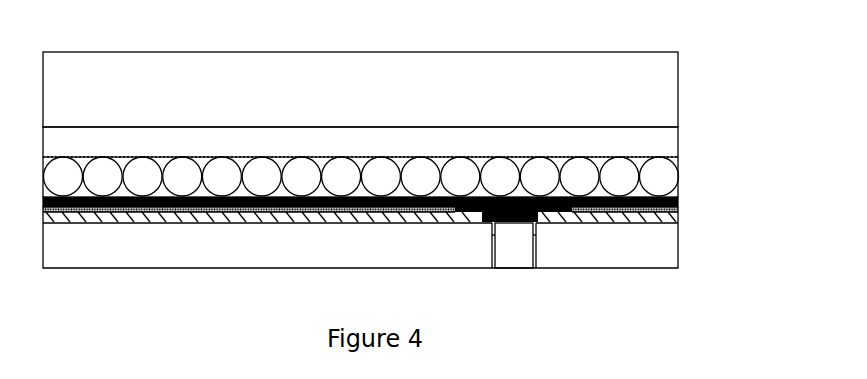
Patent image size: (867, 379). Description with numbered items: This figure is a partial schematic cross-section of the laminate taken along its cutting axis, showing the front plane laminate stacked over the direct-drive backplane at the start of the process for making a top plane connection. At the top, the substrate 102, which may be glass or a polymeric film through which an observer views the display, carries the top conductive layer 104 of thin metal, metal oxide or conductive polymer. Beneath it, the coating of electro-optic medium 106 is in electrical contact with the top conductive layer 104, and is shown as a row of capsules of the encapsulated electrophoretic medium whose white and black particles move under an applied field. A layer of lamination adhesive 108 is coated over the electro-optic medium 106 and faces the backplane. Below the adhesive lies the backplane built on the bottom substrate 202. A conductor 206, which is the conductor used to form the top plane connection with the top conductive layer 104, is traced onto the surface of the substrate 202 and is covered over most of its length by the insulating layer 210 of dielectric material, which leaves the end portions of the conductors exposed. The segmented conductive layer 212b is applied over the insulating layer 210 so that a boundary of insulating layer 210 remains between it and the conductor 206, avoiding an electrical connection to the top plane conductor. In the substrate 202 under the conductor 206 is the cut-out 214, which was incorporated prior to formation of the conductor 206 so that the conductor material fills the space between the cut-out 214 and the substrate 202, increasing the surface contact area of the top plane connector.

The substrate 102 is at (367, 92).
The top conductive layer 104 is at (365, 150).
The electro-optic medium 106 is at (678, 160).
The lamination adhesive 108 is at (678, 198).
The bottom substrate 202 is at (678, 263).
The conductor 206 is at (443, 224).
The insulating layer 210 is at (678, 218).
The segmented conductive layer 212b is at (678, 210).
The cut-out 214 is at (520, 270).